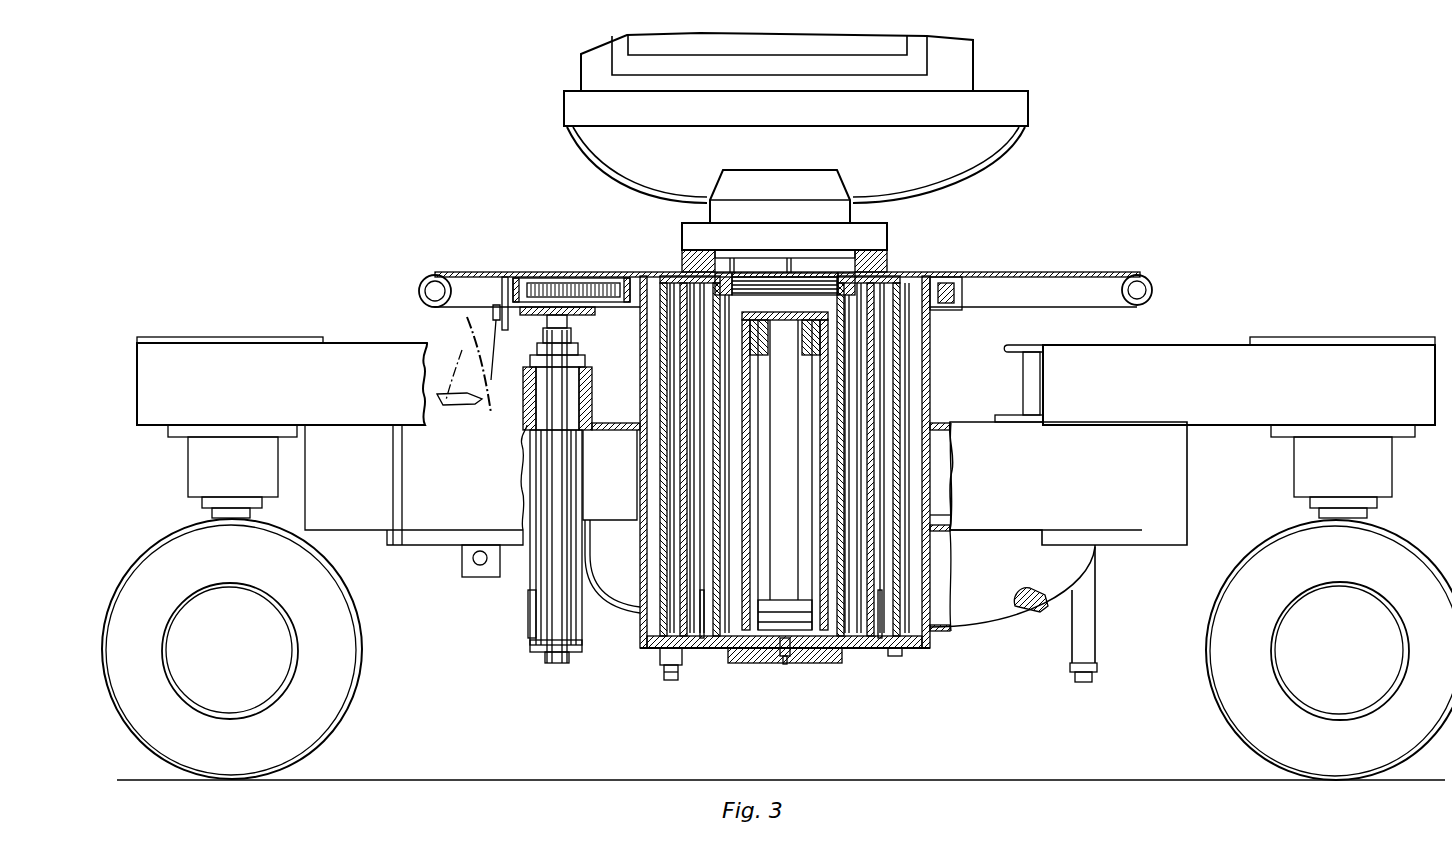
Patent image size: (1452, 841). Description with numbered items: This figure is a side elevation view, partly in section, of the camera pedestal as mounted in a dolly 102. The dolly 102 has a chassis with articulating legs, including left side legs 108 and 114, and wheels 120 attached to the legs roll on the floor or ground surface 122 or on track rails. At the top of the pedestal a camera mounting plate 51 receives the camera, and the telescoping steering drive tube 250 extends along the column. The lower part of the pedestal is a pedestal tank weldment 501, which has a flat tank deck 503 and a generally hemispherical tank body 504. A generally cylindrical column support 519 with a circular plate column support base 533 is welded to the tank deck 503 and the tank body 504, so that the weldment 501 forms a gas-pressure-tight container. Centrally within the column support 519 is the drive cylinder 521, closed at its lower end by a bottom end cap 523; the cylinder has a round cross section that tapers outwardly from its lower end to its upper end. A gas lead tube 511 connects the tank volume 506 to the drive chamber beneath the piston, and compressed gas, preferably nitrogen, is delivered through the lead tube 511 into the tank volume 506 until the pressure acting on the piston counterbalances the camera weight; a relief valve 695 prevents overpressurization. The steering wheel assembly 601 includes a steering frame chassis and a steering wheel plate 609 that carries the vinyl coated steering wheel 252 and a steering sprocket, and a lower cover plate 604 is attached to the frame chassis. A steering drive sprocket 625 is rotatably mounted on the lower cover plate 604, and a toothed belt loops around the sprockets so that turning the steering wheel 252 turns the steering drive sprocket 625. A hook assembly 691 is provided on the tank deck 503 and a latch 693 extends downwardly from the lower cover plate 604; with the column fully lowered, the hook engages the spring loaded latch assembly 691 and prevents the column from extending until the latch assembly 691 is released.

The camera mounting plate 51 is at (801, 276).
The dolly 102 is at (392, 578).
The left side leg 108 is at (164, 352).
The left side leg 114 is at (1280, 350).
The wheels 120 is at (348, 708).
The ground surface 122 is at (478, 773).
The telescoping steering drive tube 250 is at (533, 604).
The steering wheel 252 is at (1152, 290).
The pedestal tank weldment 501 is at (943, 628).
The tank deck 503 is at (608, 421).
The tank body 504 is at (985, 615).
The tank volume 506 is at (622, 611).
The gas lead tube 511 is at (790, 660).
The column support 519 is at (928, 405).
The drive cylinder 521 is at (815, 402).
The bottom end cap 523 is at (750, 662).
The column support base 533 is at (710, 660).
The steering wheel assembly 601 is at (520, 238).
The lower cover plate 604 is at (614, 301).
The steering wheel plate 609 is at (550, 277).
The steering drive sprocket 625 is at (584, 278).
The hook assembly 691 is at (480, 362).
The latch 693 is at (501, 277).
The relief valve 695 is at (1030, 589).